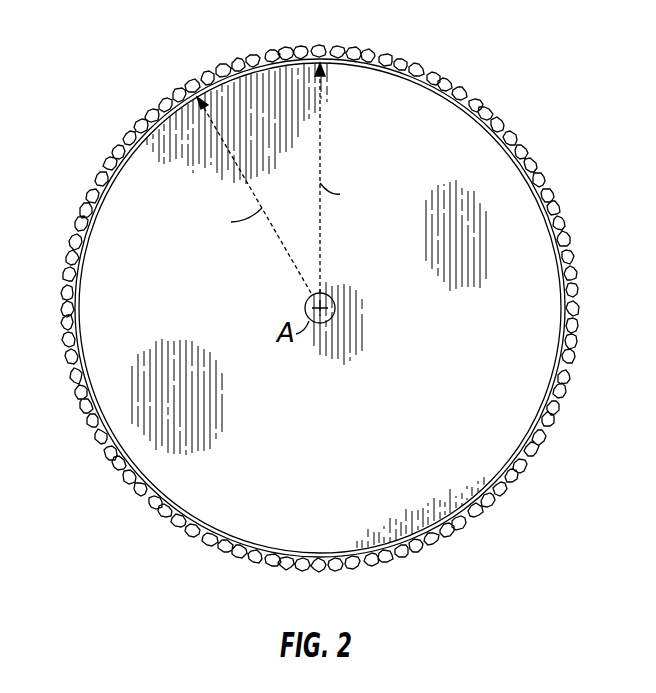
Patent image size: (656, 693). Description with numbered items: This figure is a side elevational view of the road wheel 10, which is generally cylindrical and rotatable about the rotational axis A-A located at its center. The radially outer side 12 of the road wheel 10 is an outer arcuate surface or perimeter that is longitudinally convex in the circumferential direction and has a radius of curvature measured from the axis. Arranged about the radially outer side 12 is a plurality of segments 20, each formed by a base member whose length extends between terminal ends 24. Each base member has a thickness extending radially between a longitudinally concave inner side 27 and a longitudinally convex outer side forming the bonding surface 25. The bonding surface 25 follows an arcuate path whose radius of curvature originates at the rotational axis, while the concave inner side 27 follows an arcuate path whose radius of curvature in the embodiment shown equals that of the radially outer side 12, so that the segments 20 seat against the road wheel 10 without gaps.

The road wheel 10 is at (535, 372).
The radially outer side 12 is at (524, 440).
The segments 20 is at (331, 54).
The terminal ends 24 is at (140, 135).
The bonding surface 25 is at (207, 70).
The concave inner side 27 is at (407, 80).